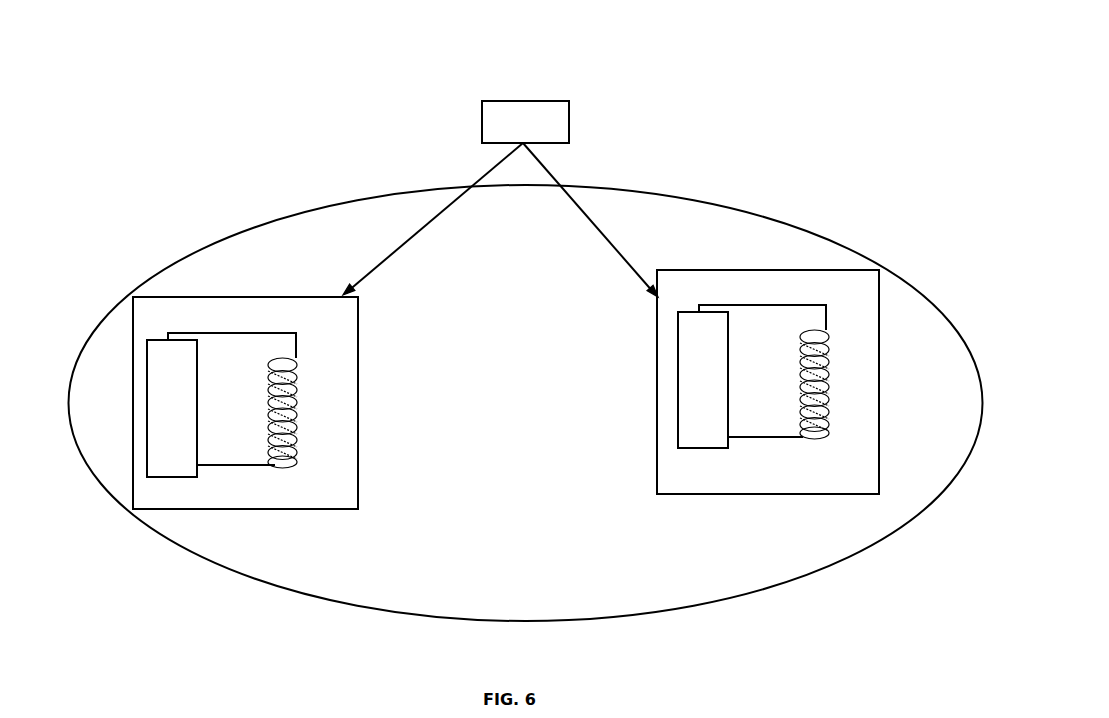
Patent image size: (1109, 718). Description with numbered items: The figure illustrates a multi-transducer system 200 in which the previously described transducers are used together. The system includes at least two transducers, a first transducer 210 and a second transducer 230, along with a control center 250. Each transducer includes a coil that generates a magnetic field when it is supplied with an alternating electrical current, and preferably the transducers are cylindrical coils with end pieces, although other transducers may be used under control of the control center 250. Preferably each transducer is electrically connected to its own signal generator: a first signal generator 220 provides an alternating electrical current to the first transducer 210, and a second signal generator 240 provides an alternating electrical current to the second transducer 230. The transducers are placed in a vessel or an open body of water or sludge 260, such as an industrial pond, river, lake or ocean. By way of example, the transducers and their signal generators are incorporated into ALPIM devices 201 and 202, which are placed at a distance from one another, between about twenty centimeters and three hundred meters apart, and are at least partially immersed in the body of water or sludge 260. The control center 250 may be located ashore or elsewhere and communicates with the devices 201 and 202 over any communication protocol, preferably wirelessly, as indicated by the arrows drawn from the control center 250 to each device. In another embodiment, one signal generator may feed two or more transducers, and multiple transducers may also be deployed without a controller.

The multi-transducer system 200 is at (716, 90).
The ALPIM device 201 is at (338, 323).
The ALPIM device 202 is at (873, 295).
The first transducer 210 is at (294, 376).
The first signal generator 220 is at (187, 413).
The second transducer 230 is at (828, 372).
The second signal generator 240 is at (718, 383).
The control center 250 is at (540, 131).
The vessel or open body of water or sludge 260 is at (712, 602).